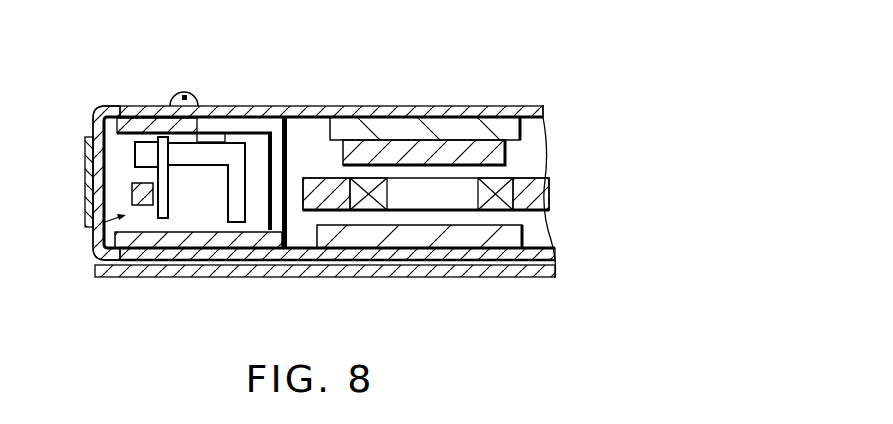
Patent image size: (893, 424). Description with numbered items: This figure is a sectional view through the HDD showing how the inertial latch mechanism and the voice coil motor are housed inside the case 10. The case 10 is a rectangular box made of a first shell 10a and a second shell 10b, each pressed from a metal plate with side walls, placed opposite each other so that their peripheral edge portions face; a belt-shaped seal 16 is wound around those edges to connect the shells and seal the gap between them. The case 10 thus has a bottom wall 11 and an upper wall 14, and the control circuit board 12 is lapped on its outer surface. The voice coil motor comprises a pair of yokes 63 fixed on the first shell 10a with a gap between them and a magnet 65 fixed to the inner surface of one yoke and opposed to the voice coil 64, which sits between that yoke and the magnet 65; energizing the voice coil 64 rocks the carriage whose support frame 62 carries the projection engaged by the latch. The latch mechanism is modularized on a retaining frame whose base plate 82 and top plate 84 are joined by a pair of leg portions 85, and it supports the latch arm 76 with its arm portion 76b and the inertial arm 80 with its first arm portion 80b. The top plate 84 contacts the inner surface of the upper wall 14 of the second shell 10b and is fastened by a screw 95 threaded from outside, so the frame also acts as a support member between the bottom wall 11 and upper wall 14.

The case 10 is at (296, 163).
The first shell 10a is at (287, 258).
The second shell 10b is at (290, 140).
The bottom wall 11 is at (528, 253).
The control circuit board 12 is at (365, 274).
The upper wall 14 is at (403, 107).
The seal 16 is at (85, 177).
The support frame 62 is at (537, 188).
The yokes 63 is at (92, 225).
The voice coil 64 is at (500, 180).
The magnet 65 is at (490, 155).
The latch arm 76 is at (208, 215).
The arm portion 76b is at (130, 195).
The inertial arm 80 is at (232, 153).
The first arm portion 80b is at (143, 157).
The base plate 82 is at (172, 243).
The top plate 84 is at (138, 122).
The leg portions 85 is at (288, 148).
The screw 95 is at (185, 93).